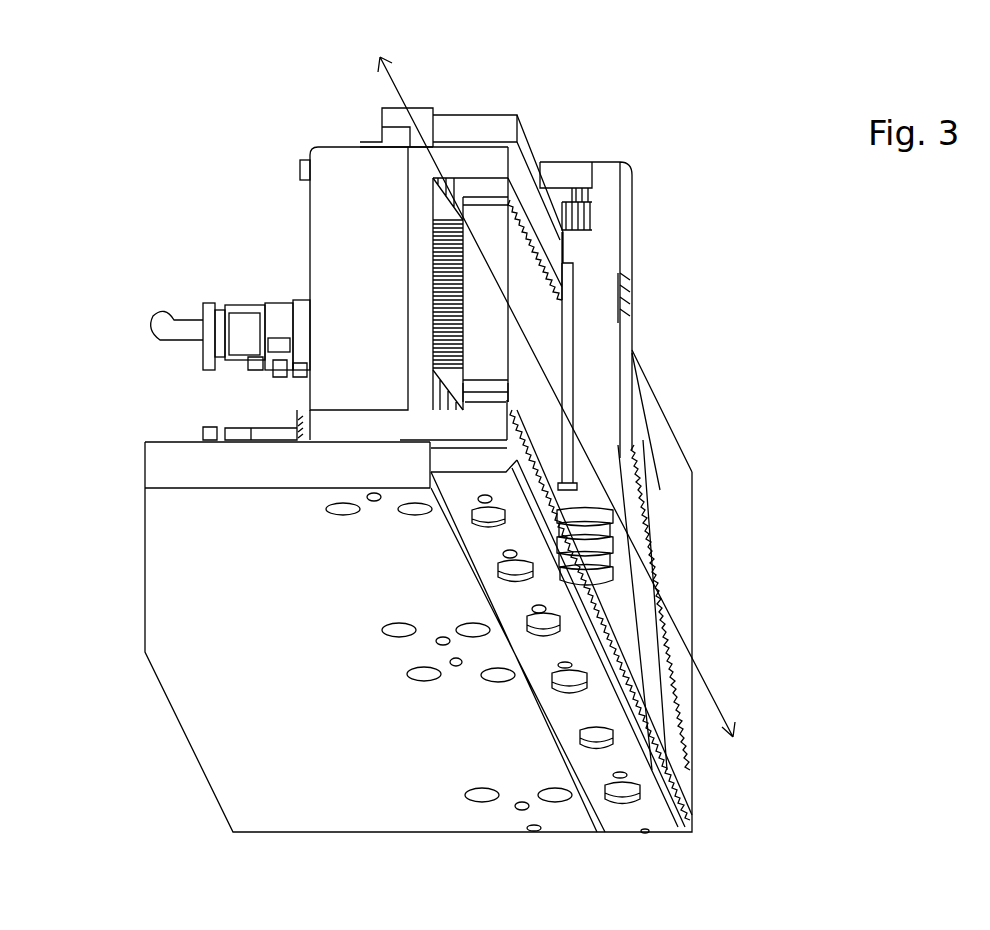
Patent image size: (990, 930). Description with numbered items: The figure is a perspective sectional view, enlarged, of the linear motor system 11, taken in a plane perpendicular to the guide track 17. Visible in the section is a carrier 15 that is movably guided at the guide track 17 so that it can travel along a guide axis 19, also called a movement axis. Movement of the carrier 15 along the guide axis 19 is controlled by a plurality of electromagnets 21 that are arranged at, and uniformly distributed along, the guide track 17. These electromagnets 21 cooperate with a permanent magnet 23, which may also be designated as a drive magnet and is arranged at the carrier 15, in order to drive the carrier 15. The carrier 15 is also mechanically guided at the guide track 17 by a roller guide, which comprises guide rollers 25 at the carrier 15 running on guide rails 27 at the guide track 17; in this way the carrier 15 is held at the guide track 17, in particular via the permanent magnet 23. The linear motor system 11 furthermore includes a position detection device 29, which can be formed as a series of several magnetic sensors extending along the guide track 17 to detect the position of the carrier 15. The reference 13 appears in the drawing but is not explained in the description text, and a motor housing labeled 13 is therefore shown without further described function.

The linear motor system 11 is at (720, 163).
The motor 13 is at (372, 305).
The carrier 15 is at (625, 338).
The guide track 17 is at (480, 162).
The guide axis 19 is at (715, 697).
The electromagnets 21 is at (660, 540).
The permanent magnet 23 is at (570, 383).
The guide rollers 25 is at (583, 215).
The guide rails 27 is at (548, 187).
The position detection device 29 is at (393, 118).